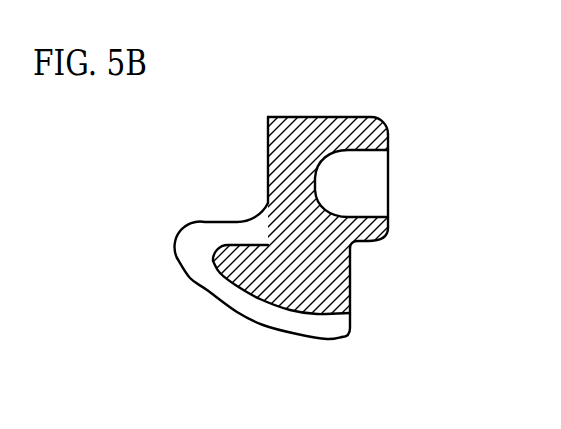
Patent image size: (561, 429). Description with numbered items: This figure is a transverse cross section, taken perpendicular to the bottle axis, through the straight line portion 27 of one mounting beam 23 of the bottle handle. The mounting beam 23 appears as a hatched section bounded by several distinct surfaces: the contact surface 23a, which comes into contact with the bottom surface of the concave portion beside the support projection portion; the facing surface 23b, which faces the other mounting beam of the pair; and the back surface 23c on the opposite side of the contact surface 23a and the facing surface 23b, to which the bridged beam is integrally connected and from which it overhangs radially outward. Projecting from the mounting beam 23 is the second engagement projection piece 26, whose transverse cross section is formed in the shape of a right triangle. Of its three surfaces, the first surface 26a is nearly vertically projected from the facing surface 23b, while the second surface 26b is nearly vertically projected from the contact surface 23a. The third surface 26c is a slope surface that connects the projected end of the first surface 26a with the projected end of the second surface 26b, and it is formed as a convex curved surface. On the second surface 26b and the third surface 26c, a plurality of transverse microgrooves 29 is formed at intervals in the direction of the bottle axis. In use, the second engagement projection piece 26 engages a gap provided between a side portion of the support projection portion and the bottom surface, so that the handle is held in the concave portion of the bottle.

The mounting beam 23 is at (405, 93).
The contact surface 23a is at (268, 152).
The facing surface 23b is at (374, 241).
The back surface 23c is at (388, 180).
The second engagement projection piece 26 is at (245, 320).
The first surface 26a is at (352, 283).
The second surface 26b is at (218, 222).
The third surface 26c is at (273, 330).
The straight line portion 27 is at (323, 117).
The transverse microgrooves 29 is at (212, 283).